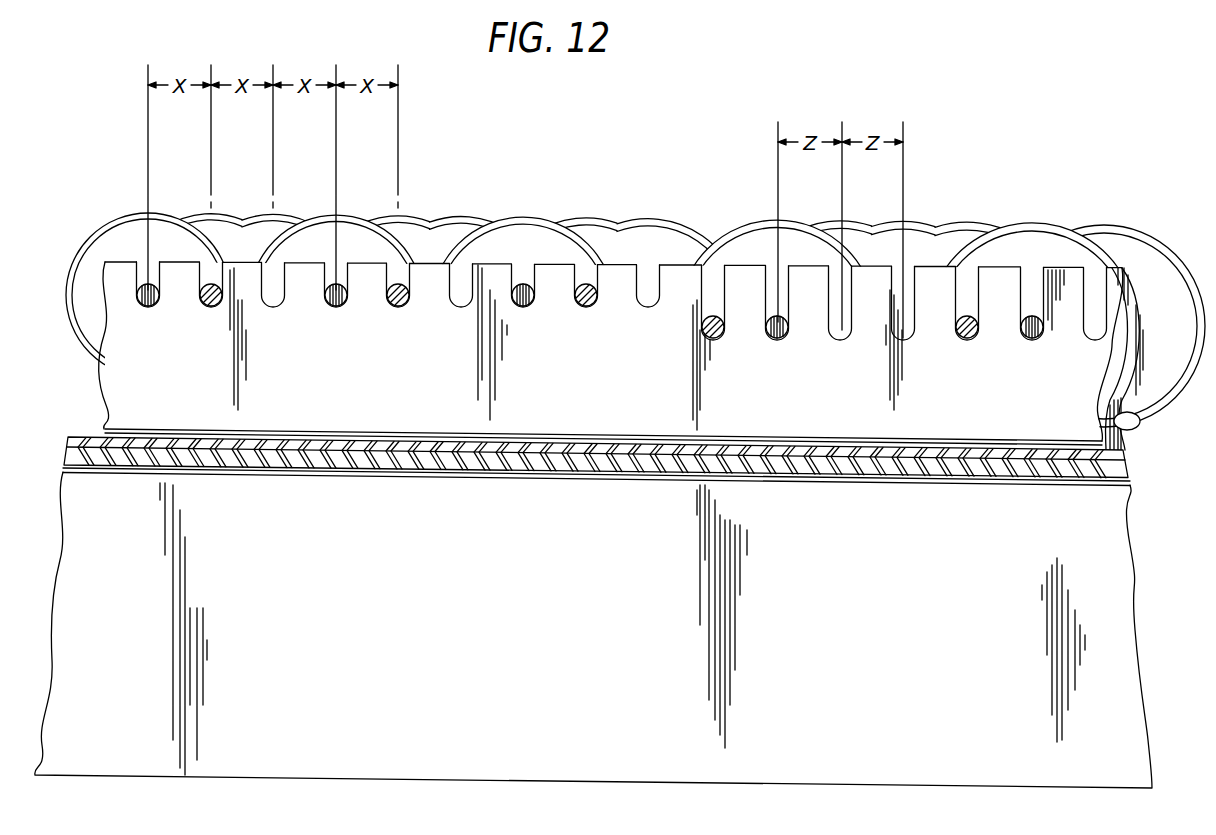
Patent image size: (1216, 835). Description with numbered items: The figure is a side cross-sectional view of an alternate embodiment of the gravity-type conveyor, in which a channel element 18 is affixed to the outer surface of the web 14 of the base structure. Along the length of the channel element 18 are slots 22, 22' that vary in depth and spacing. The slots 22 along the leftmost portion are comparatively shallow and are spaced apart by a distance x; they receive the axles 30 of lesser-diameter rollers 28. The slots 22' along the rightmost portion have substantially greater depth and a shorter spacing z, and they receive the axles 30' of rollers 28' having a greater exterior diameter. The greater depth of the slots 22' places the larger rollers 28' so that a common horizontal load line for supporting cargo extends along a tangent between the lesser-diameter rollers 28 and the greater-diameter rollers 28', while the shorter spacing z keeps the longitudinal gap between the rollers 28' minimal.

The web 14 is at (80, 440).
The channel element 18 is at (1130, 426).
The slot 22 is at (398, 305).
The slot 22' is at (904, 318).
The roller 28 is at (404, 283).
The roller 28' is at (942, 304).
The axle 30 is at (367, 321).
The axle 30' is at (872, 349).